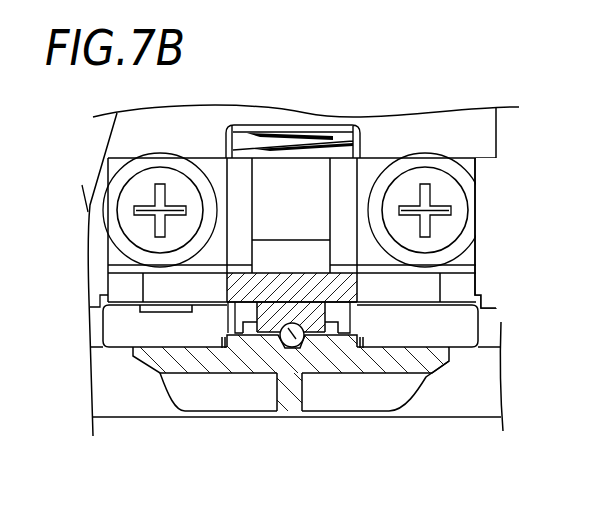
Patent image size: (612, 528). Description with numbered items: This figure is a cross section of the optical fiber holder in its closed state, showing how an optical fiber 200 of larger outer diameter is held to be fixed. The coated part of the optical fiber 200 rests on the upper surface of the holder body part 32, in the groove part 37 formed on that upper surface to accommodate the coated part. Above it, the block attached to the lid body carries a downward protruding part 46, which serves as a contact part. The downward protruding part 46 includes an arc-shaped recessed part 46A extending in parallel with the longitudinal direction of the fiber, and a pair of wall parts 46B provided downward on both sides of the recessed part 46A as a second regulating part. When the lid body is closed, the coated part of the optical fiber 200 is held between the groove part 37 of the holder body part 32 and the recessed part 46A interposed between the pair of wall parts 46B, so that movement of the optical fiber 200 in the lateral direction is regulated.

The downward protruding part 46 is at (287, 290).
The recessed part 46A is at (299, 324).
The wall parts 46B is at (251, 334).
The optical fiber 200 is at (289, 349).
The groove part 37 is at (295, 360).
The holder body part 32 is at (443, 362).